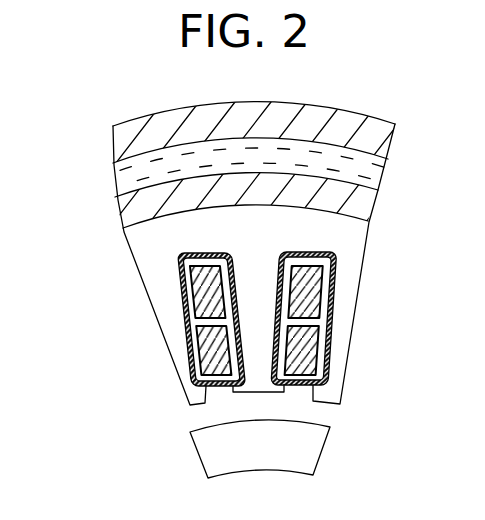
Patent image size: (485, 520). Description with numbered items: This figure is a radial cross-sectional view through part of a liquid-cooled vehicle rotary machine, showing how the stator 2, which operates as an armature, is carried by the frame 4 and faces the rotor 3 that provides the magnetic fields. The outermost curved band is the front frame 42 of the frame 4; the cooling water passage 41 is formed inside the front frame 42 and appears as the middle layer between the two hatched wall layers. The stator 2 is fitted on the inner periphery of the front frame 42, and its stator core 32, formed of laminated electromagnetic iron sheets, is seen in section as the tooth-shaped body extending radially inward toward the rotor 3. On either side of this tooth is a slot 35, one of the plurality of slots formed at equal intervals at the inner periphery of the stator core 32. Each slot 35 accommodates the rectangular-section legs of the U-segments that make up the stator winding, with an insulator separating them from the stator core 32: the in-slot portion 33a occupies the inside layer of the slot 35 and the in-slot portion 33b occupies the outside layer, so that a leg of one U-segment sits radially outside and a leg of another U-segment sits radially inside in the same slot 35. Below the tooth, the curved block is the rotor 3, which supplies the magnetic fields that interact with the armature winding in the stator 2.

The stator 2 is at (265, 233).
The rotor 3 is at (337, 450).
The frame 4 is at (367, 105).
The stator core 32 is at (353, 245).
The in-slot portion 33a is at (303, 355).
The in-slot portion 33b is at (310, 293).
The slot 35 is at (185, 278).
The cooling water passage 41 is at (127, 178).
The front frame 42 is at (368, 200).